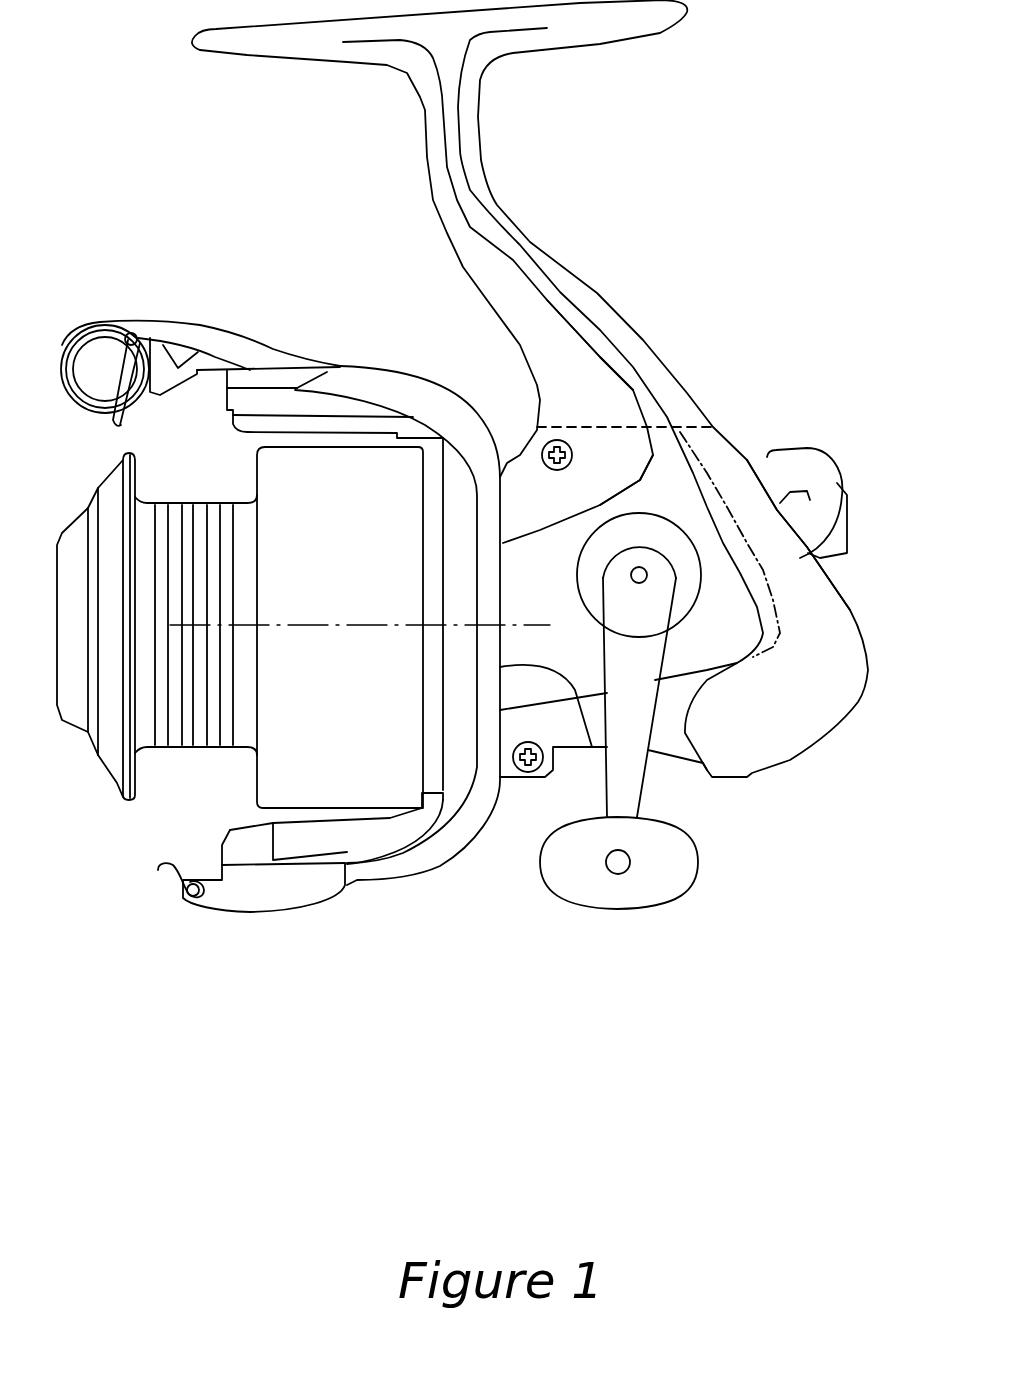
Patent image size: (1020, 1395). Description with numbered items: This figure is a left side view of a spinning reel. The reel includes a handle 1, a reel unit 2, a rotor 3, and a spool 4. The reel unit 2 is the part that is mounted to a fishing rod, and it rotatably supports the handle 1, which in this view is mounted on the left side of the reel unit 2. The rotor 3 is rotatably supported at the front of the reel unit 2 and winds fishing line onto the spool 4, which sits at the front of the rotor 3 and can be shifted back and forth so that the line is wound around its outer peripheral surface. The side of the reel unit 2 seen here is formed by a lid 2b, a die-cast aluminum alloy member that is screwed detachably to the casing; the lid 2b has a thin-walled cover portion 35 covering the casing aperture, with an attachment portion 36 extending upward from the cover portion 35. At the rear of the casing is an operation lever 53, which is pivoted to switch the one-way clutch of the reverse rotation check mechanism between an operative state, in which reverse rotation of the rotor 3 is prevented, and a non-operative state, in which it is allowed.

The handle 1 is at (647, 785).
The reel unit 2 is at (573, 221).
The lid 2b is at (657, 482).
The rotor 3 is at (443, 830).
The spool 4 is at (183, 723).
The cover portion 35 is at (720, 600).
The attachment portion 36 is at (547, 323).
The operation lever 53 is at (793, 460).